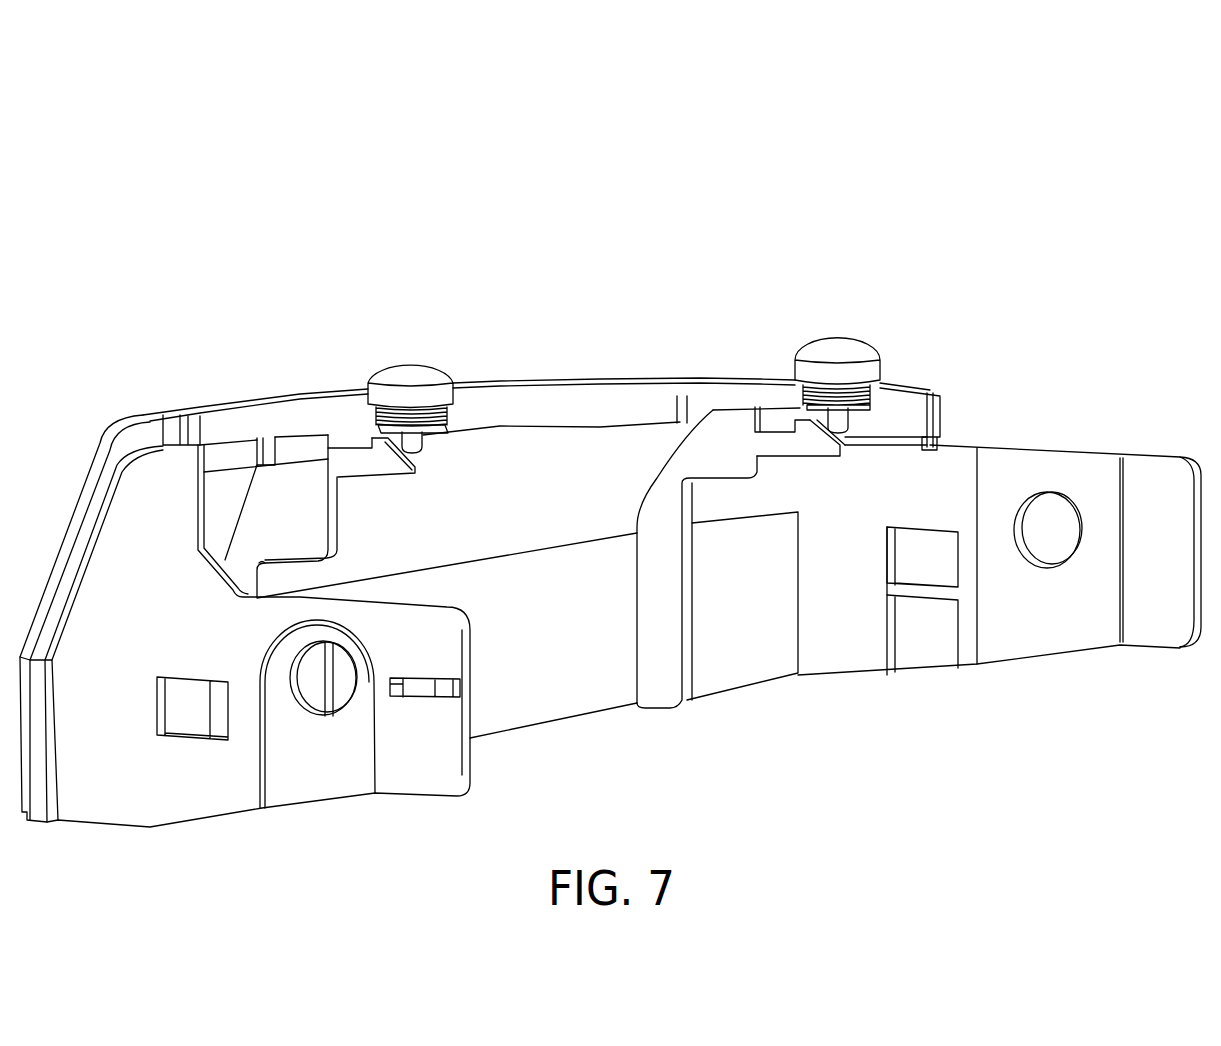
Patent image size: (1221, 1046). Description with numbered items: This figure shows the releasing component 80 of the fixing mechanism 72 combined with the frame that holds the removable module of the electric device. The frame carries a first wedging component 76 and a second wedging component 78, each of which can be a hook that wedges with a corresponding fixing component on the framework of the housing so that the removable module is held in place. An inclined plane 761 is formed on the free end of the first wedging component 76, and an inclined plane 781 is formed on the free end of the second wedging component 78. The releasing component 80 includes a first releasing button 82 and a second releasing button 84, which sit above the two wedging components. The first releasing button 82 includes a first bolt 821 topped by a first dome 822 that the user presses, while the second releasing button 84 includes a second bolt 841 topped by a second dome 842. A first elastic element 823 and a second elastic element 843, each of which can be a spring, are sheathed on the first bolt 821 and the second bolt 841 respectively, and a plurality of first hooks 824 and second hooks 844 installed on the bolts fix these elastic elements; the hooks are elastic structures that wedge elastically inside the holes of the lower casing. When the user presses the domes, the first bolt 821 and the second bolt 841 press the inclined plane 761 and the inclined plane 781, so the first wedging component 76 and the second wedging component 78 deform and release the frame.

The fixing mechanism 72 is at (1105, 143).
The first wedging component 76 is at (787, 421).
The inclined plane 761 is at (945, 443).
The second wedging component 78 is at (353, 433).
The inclined plane 781 is at (414, 462).
The releasing component 80 is at (470, 206).
The first releasing button 82 is at (1028, 263).
The first bolt 821 is at (840, 425).
The first dome 822 is at (833, 352).
The first elastic element 823 is at (868, 413).
The first hooks 824 is at (895, 422).
The second releasing button 84 is at (602, 263).
The second bolt 841 is at (410, 440).
The second dome 842 is at (403, 372).
The second elastic element 843 is at (448, 410).
The second hooks 844 is at (430, 462).